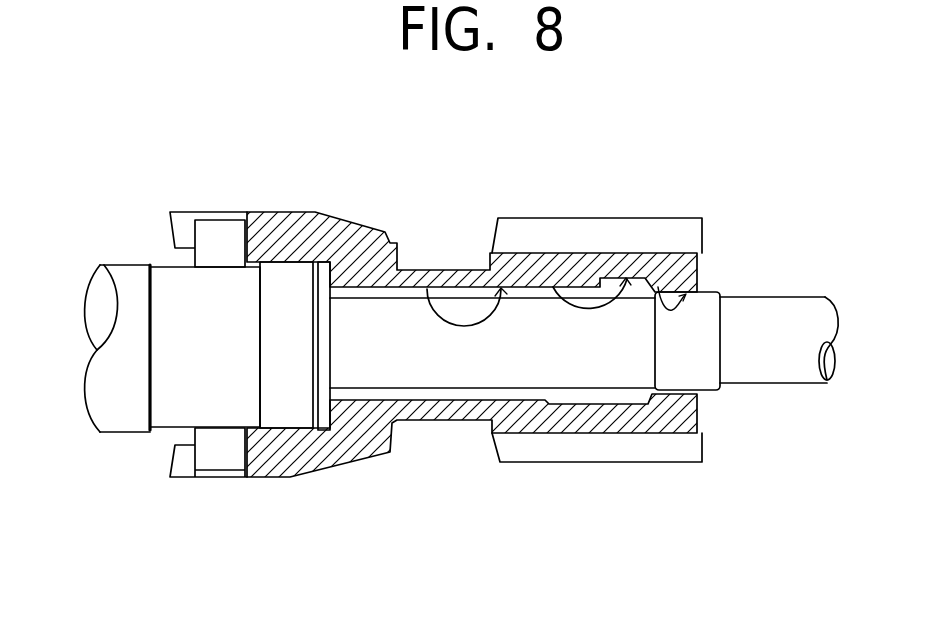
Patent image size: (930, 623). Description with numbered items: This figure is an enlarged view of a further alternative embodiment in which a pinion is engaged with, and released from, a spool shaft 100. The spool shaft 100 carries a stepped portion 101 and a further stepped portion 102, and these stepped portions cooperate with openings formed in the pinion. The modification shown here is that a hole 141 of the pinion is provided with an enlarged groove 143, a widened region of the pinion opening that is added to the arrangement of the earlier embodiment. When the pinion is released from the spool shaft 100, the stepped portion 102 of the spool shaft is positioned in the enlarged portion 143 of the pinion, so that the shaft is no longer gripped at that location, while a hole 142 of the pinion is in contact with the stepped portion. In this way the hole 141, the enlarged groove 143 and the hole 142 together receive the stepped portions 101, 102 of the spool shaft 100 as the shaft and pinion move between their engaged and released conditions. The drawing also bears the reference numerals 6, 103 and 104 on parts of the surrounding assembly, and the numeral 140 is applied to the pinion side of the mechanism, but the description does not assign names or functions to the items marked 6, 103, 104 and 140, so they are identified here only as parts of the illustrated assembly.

The coupling nut 6 is at (192, 478).
The spool shaft 100 is at (187, 335).
The stepped portion 101 is at (290, 395).
The stepped portion 102 is at (705, 368).
The inner tube 103 is at (393, 362).
The cable 104 is at (777, 317).
The connector body 140 is at (263, 197).
The hole 141 is at (427, 298).
The hole 142 is at (658, 287).
The enlarged groove 143 is at (550, 287).